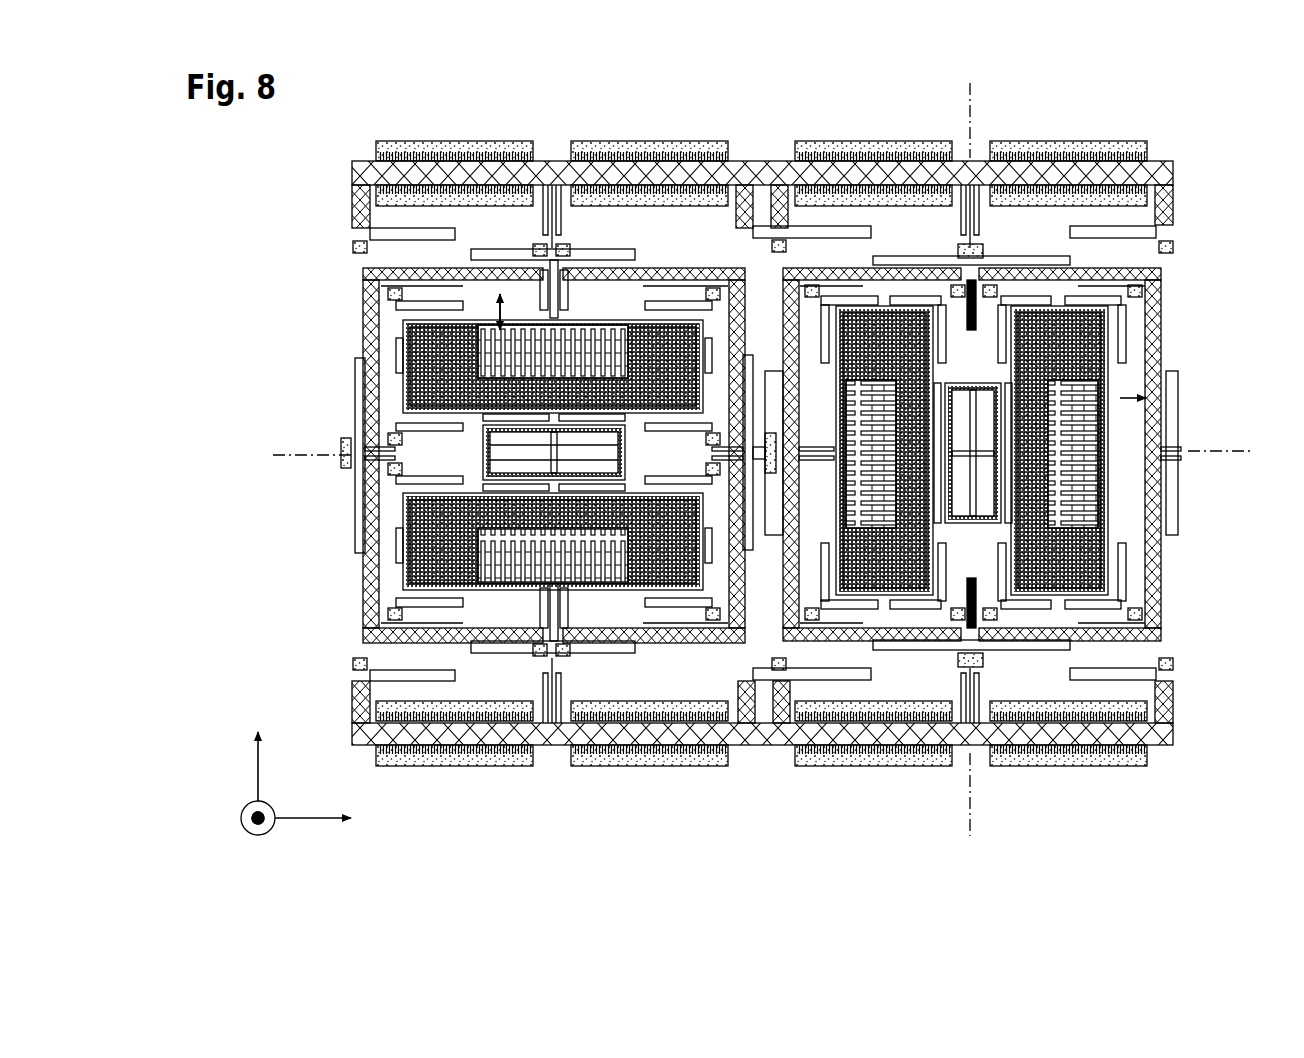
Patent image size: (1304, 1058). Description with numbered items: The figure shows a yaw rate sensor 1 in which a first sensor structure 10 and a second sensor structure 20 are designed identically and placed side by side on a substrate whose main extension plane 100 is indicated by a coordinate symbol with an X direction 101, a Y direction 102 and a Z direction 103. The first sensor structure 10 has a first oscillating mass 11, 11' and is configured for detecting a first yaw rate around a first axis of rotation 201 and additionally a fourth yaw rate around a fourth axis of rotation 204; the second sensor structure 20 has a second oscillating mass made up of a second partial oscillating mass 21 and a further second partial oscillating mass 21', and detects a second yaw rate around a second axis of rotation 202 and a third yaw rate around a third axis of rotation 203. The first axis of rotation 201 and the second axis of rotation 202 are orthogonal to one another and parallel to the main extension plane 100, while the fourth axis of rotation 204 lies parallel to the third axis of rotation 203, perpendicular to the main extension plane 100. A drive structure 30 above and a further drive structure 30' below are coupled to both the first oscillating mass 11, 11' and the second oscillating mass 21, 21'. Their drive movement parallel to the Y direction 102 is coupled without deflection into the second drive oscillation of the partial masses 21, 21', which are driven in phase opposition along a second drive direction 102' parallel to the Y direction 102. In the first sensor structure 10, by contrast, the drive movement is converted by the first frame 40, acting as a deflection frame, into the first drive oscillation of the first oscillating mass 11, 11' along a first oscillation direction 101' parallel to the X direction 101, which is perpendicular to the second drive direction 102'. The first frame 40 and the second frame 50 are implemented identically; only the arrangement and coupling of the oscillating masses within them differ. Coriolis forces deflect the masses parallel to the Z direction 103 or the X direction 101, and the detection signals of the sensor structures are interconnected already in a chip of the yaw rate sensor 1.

The yaw rate sensor 1 is at (352, 142).
The first sensor structure 10 is at (1220, 305).
The first oscillating mass 11 is at (1129, 450).
The first oscillating mass 11' is at (892, 566).
The second sensor structure 20 is at (278, 300).
The second partial oscillating mass 21 is at (491, 366).
The further second partial oscillating mass 21' is at (491, 541).
The drive structure 30 is at (800, 203).
The further drive structure 30' is at (804, 703).
The first frame 40 is at (1160, 261).
The second frame 50 is at (352, 274).
The main extension plane 100 is at (318, 770).
The X direction 101 is at (313, 852).
The first oscillation direction 101' is at (1194, 367).
The Y direction 102 is at (214, 766).
The second drive direction 102' is at (492, 264).
The Z direction 103 is at (236, 824).
The first axis of rotation 201 is at (962, 88).
The second axis of rotation 202 is at (272, 440).
The third axis of rotation 203 is at (540, 440).
The fourth axis of rotation 204 is at (968, 452).